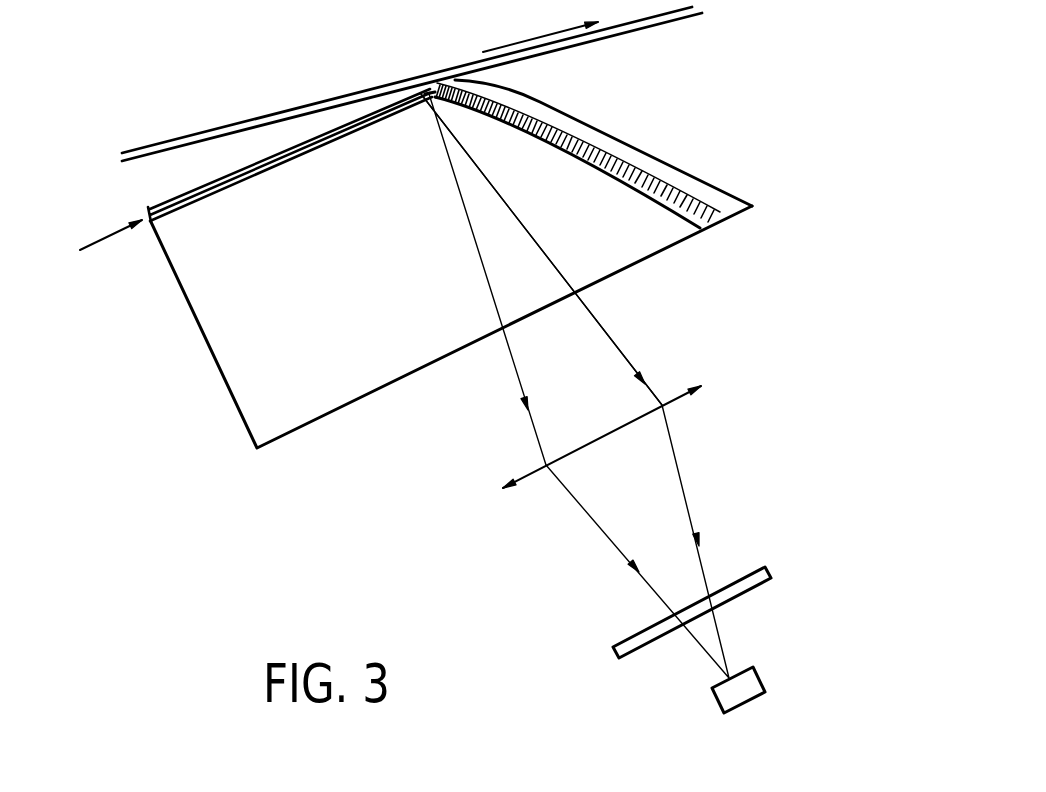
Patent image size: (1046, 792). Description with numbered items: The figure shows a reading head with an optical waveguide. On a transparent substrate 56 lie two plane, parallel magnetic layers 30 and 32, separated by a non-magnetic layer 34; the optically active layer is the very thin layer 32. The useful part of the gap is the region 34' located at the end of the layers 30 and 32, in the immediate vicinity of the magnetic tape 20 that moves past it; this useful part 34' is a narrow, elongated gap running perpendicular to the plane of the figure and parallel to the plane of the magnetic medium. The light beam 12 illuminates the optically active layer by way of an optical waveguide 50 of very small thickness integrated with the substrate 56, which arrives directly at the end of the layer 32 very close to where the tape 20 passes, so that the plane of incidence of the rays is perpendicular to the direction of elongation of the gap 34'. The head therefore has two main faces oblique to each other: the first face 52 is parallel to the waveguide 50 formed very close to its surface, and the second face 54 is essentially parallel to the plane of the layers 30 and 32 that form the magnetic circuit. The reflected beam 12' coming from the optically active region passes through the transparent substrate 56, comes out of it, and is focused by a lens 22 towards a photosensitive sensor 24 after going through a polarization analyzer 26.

The magnetic tape 20 is at (165, 142).
The light beam 12 is at (111, 265).
The first face 52 is at (260, 161).
The optical waveguide 50 is at (194, 203).
The transparent substrate 56 is at (338, 412).
The second face 54 is at (653, 155).
The magnetic layer 30 is at (582, 150).
The non-magnetic layer 34 is at (567, 162).
The useful part of the gap 34' is at (433, 54).
The optically active layer 32 is at (460, 112).
The reflected beam 12' is at (575, 386).
The lens 22 is at (673, 400).
The polarization analyzer 26 is at (757, 568).
The photosensitive sensor 24 is at (755, 682).